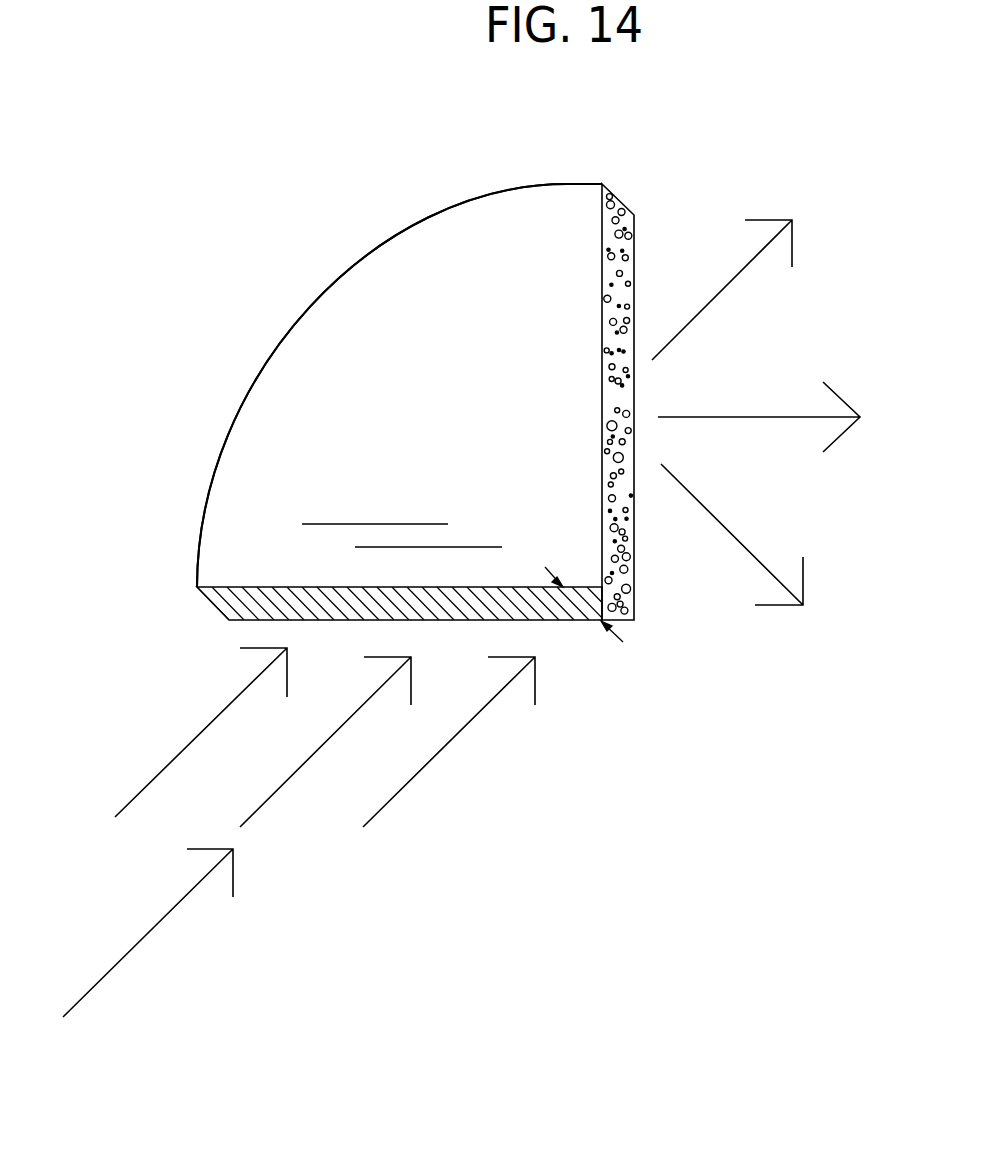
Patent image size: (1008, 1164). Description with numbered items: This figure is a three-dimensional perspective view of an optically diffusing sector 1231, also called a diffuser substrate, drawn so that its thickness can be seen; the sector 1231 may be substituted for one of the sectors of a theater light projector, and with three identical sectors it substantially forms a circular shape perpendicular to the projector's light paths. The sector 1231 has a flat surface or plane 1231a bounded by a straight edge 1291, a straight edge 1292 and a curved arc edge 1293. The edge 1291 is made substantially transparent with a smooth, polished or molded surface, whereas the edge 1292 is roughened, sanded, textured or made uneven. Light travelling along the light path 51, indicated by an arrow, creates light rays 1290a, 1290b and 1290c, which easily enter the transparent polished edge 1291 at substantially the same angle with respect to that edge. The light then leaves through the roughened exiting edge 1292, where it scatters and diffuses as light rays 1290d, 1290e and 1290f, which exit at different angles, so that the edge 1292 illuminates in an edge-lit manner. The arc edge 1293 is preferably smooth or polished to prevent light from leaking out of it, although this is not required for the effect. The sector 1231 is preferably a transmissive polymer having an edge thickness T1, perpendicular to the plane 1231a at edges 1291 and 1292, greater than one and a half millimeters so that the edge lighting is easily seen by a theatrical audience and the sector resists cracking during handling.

The optically diffusing sector 1231 is at (428, 362).
The surface or plane 1231a is at (477, 437).
The arc edge 1293 is at (303, 312).
The light exiting edge 1292 is at (625, 258).
The polished edge 1291 is at (270, 607).
The edge thickness T1 is at (597, 622).
The light ray 1290a is at (187, 747).
The light ray 1290b is at (306, 760).
The light ray 1290c is at (425, 767).
The light ray 1290d is at (745, 278).
The light ray 1290e is at (790, 415).
The light ray 1290f is at (752, 523).
The light path 51 is at (157, 922).